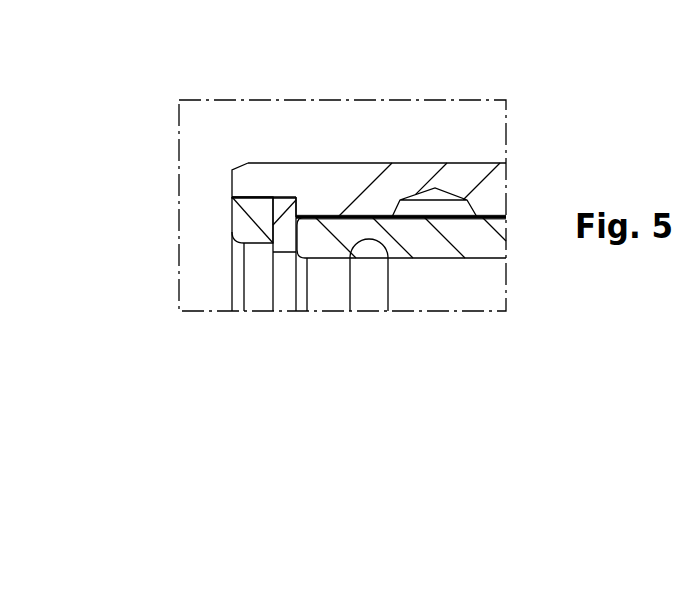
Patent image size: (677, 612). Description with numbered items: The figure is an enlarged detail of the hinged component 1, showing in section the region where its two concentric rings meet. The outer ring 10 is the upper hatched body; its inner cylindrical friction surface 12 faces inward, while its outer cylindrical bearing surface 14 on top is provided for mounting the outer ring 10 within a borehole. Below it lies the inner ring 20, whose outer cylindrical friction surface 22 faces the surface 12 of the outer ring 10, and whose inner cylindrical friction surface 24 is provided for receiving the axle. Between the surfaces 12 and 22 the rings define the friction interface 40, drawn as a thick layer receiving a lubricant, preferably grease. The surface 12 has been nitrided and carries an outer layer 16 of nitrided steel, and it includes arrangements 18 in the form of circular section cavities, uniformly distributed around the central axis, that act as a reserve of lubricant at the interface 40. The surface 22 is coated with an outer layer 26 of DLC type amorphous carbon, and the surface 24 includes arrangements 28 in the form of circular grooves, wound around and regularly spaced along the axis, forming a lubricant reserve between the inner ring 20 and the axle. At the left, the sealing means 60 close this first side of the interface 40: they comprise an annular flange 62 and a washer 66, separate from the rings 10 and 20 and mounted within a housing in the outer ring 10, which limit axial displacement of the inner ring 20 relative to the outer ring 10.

The hinged component 1 is at (228, 131).
The outer ring 10 is at (465, 176).
The inner cylindrical friction surface 12 is at (400, 232).
The outer cylindrical bearing surface 14 is at (412, 150).
The outer layer of nitrided steel 16 is at (489, 233).
The arrangements 18 is at (437, 232).
The inner ring 20 is at (434, 264).
The outer cylindrical friction surface 22 is at (320, 203).
The inner cylindrical friction surface 24 is at (332, 271).
The outer layer of DLC type amorphous carbon 26 is at (354, 202).
The arrangements 28 is at (370, 265).
The friction interface 40 is at (523, 209).
The sealing means 60 is at (156, 238).
The flange 62 is at (242, 222).
The washer 66 is at (280, 240).